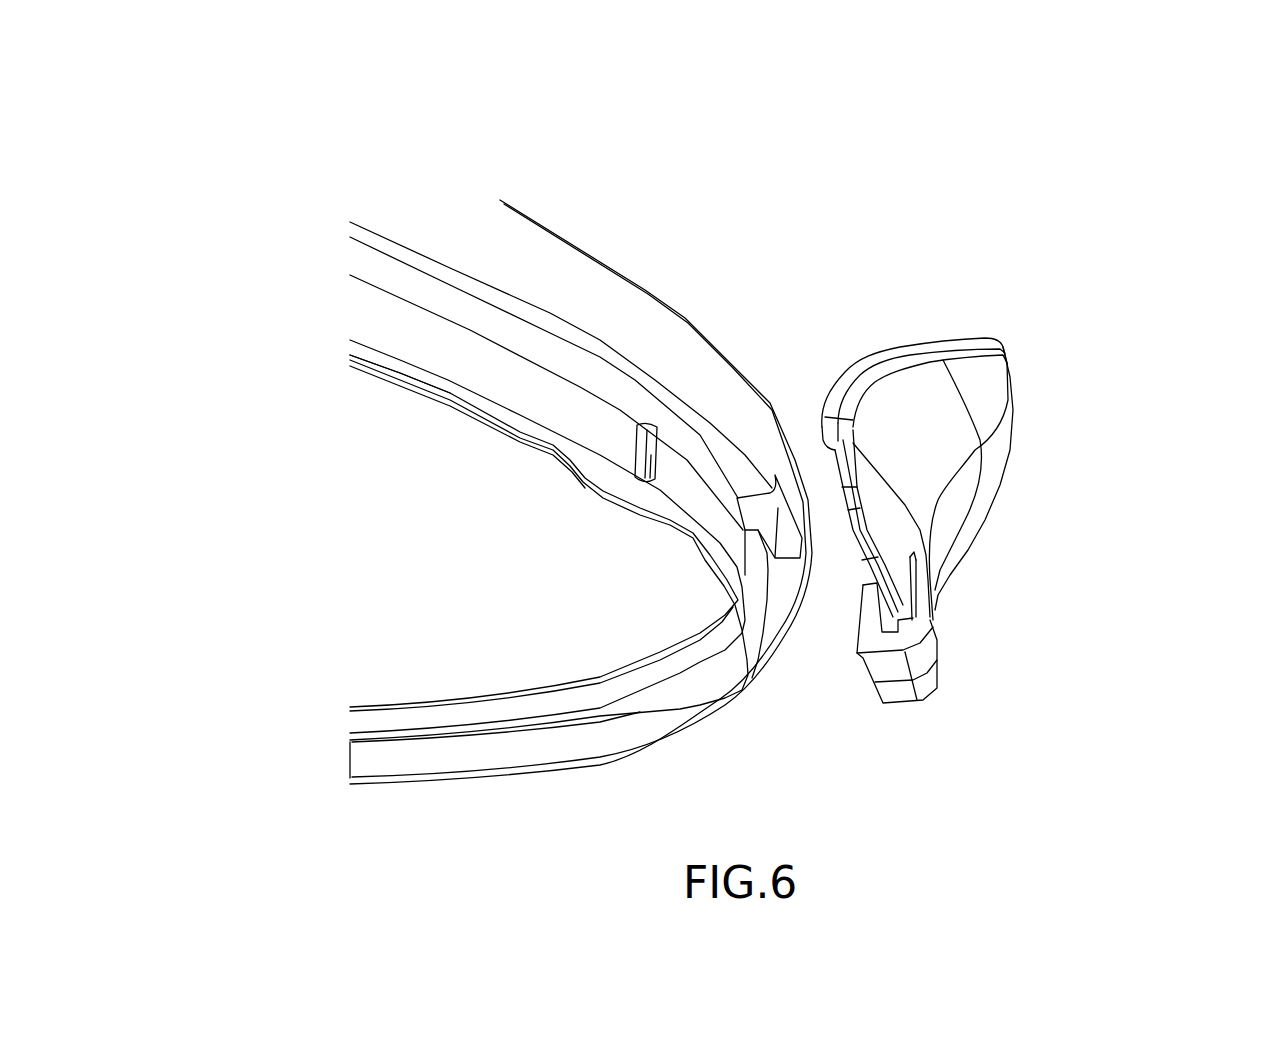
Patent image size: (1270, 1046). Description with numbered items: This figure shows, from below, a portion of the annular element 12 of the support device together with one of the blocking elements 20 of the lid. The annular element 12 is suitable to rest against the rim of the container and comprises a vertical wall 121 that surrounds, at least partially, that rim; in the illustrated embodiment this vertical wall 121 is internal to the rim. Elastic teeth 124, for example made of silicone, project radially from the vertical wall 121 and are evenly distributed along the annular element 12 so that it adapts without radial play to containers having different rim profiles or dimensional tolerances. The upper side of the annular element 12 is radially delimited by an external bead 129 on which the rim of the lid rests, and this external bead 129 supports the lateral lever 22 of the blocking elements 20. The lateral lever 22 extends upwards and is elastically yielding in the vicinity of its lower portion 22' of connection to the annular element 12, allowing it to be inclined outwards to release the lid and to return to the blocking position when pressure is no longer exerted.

The annular element 12 is at (684, 320).
The external bead 129 is at (537, 270).
The vertical wall 121 is at (447, 354).
The elastic teeth 124 is at (646, 480).
The blocking elements 20 is at (1062, 352).
The lateral lever 22 is at (1032, 490).
The lower portion 22' is at (995, 627).